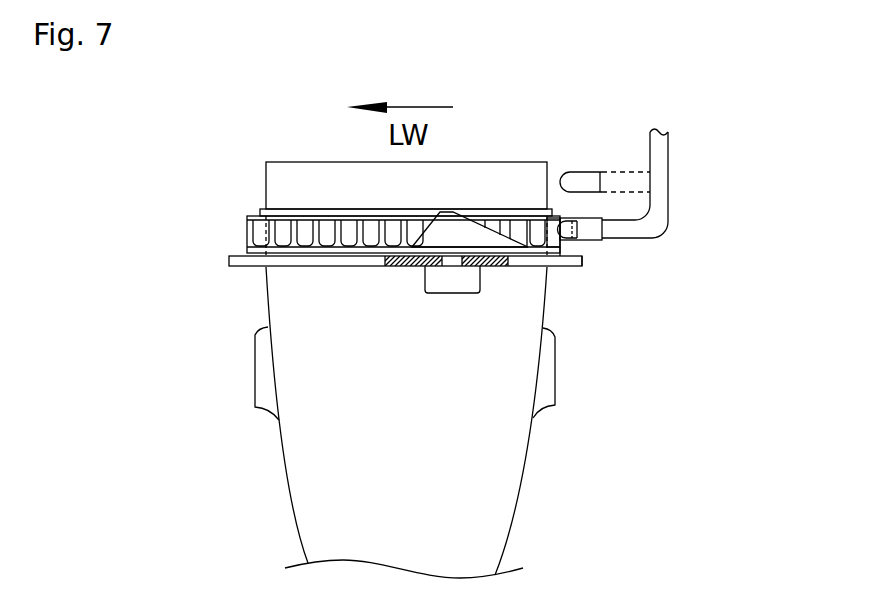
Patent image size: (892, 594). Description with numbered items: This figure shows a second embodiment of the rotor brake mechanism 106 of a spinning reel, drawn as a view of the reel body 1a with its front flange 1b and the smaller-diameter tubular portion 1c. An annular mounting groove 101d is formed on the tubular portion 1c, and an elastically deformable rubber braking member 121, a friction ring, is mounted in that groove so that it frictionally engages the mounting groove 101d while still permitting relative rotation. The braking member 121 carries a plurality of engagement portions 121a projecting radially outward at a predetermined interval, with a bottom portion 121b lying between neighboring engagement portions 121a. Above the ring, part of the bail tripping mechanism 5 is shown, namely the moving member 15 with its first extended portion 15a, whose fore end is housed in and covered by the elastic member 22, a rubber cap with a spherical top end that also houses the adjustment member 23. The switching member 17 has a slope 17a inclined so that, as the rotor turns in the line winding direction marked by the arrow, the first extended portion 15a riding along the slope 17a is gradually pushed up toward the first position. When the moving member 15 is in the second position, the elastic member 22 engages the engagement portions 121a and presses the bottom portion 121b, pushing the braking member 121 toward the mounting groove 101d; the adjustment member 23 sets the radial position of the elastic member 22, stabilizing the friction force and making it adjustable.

The reel body 1a is at (280, 437).
The flange 1b is at (228, 264).
The tubular portion 1c is at (266, 190).
The bail tripping mechanism 5 is at (508, 227).
The moving member 15 is at (674, 184).
The first extended portion 15a is at (623, 238).
The switching member 17 is at (414, 231).
The slope 17a is at (485, 226).
The elastic member 22 is at (561, 218).
The adjustment member 23 is at (580, 243).
The mounting groove 101d is at (560, 258).
The rotor brake mechanism 106 is at (558, 209).
The braking member 121 is at (245, 232).
The engagement portions 121a is at (261, 211).
The bottom portion 121b is at (289, 231).